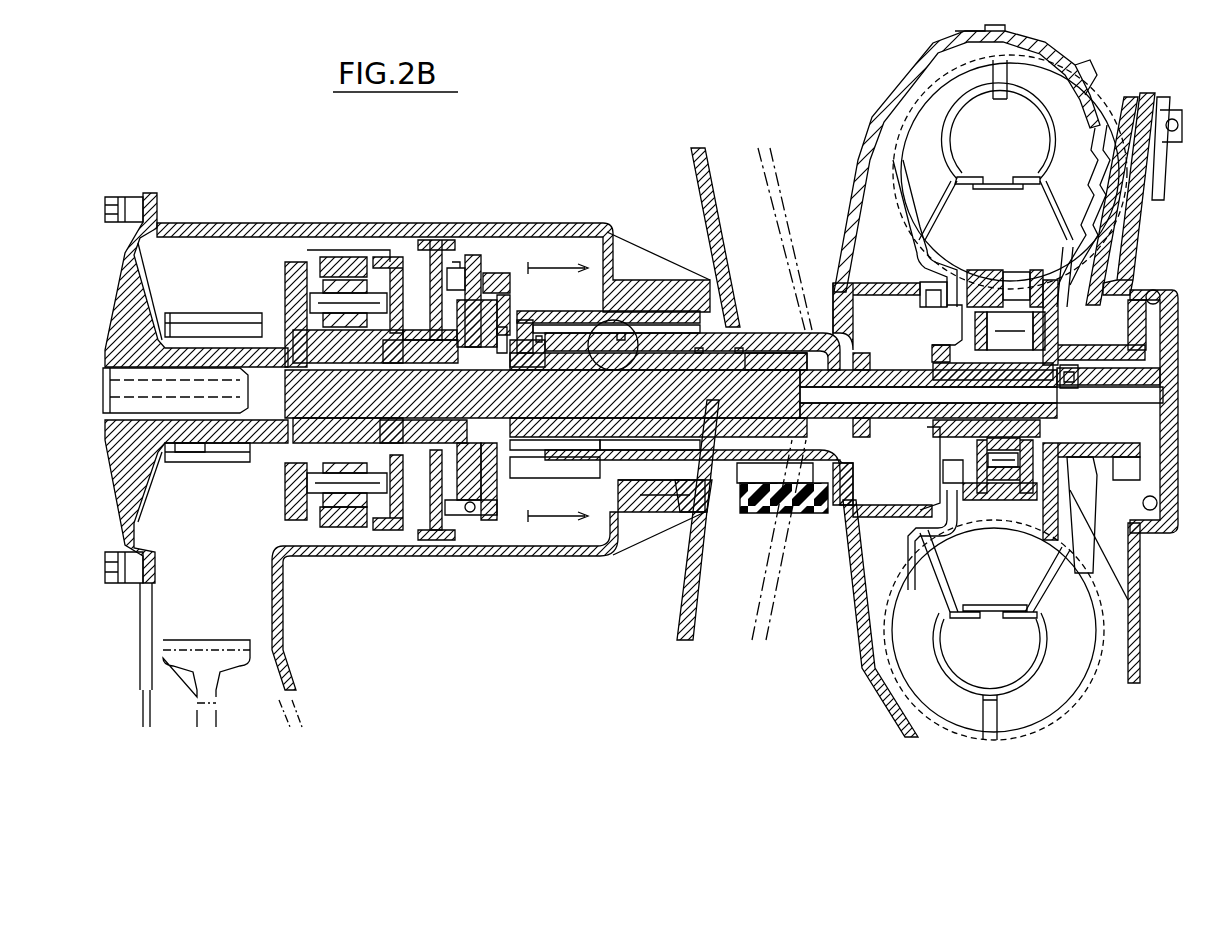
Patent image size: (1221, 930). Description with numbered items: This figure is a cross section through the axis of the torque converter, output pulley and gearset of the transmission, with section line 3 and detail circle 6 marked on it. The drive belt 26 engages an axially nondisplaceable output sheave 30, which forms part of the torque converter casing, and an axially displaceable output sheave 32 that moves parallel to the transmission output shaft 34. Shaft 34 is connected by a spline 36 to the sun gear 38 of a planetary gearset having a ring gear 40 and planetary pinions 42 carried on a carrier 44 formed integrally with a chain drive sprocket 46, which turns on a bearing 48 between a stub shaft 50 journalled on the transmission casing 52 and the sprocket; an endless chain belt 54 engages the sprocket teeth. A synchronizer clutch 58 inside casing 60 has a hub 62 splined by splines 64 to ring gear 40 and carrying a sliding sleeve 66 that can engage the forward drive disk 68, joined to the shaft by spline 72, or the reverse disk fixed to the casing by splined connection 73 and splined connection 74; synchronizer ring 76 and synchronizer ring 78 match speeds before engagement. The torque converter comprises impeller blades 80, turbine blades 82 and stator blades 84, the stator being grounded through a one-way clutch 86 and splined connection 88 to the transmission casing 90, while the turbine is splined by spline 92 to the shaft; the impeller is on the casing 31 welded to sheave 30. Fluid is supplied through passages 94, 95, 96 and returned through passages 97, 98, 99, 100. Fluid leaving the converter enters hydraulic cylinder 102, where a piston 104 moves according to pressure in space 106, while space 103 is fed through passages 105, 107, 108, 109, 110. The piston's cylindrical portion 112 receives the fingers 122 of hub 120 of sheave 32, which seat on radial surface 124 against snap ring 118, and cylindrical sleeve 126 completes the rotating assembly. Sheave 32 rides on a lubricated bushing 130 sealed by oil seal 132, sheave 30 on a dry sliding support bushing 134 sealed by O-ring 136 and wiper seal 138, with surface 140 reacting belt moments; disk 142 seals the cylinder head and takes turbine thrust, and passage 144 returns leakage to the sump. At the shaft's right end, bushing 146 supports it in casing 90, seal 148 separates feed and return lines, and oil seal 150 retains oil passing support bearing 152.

The section line 3- 3 is at (553, 388).
The detail circle 6 is at (628, 322).
The drive belt 26 is at (765, 518).
The output sheave 30 is at (858, 660).
The torque converter casing 31 is at (1082, 700).
The output sheave 32 is at (1013, 147).
The transmission output shaft 34 is at (290, 396).
The spline 36 is at (542, 394).
The sun gear 38 is at (348, 366).
The ring gear 40 is at (335, 250).
The planetary pinions 42 is at (322, 527).
The carrier 44 is at (285, 278).
The chain drive sprocket 46 is at (250, 443).
The bearing 48 is at (212, 443).
The stub shaft 50 is at (112, 435).
The transmission casing 52 is at (148, 487).
The endless chain belt 54 is at (185, 318).
The synchronizer clutch 58 is at (493, 248).
The casing 60 is at (460, 265).
The hub 62 is at (477, 255).
The splines 64 is at (467, 352).
The sleeve 66 is at (468, 530).
The forward drive disk 68 is at (502, 272).
The spline 72 is at (440, 240).
The splined connection 73 is at (429, 366).
The splined connection 74 is at (400, 540).
The synchronizer ring 76 is at (490, 530).
The synchronizer ring 78 is at (447, 540).
The impeller blades 80 is at (1048, 82).
The turbine blades 82 is at (900, 152).
The stator blades 84 is at (945, 226).
The one-way clutch 86 is at (990, 300).
The splined connection 88 is at (1015, 300).
The transmission casing 90 is at (1163, 356).
The spline 92 is at (962, 385).
The passage 94 is at (1075, 325).
The passage 95 is at (1130, 340).
The passage 96 is at (1150, 376).
The passage 97 is at (925, 528).
The passage 98 is at (947, 445).
The passage 99 is at (1150, 410).
The passage 100 is at (1140, 508).
The hydraulic cylinder 102 is at (882, 502).
The space 103 is at (788, 350).
The piston 104 is at (864, 290).
The passage 105 is at (725, 367).
The space 106 is at (771, 377).
The passage 107 is at (855, 385).
The passage 108 is at (1150, 345).
The passage 109 is at (1140, 207).
The passage 110 is at (1157, 112).
The cylindrical portion 112 is at (573, 370).
The snap ring 118 is at (500, 355).
The hub 120 is at (552, 311).
The fingers 122 is at (525, 330).
The radial surface 124 is at (528, 366).
The cylindrical sleeve 126 is at (630, 432).
The lubricated bushing 130 is at (655, 498).
The oil seal 132 is at (696, 508).
The sliding support bushing 134 is at (742, 468).
The O-ring 136 is at (590, 452).
The wiper seal 138 is at (600, 478).
The surface 140 is at (552, 455).
The disk 142 is at (932, 310).
The passage 144 is at (577, 326).
The bushing 146 is at (932, 350).
The seal 148 is at (1075, 382).
The oil seal 150 is at (1135, 480).
The support bearing 152 is at (1130, 450).